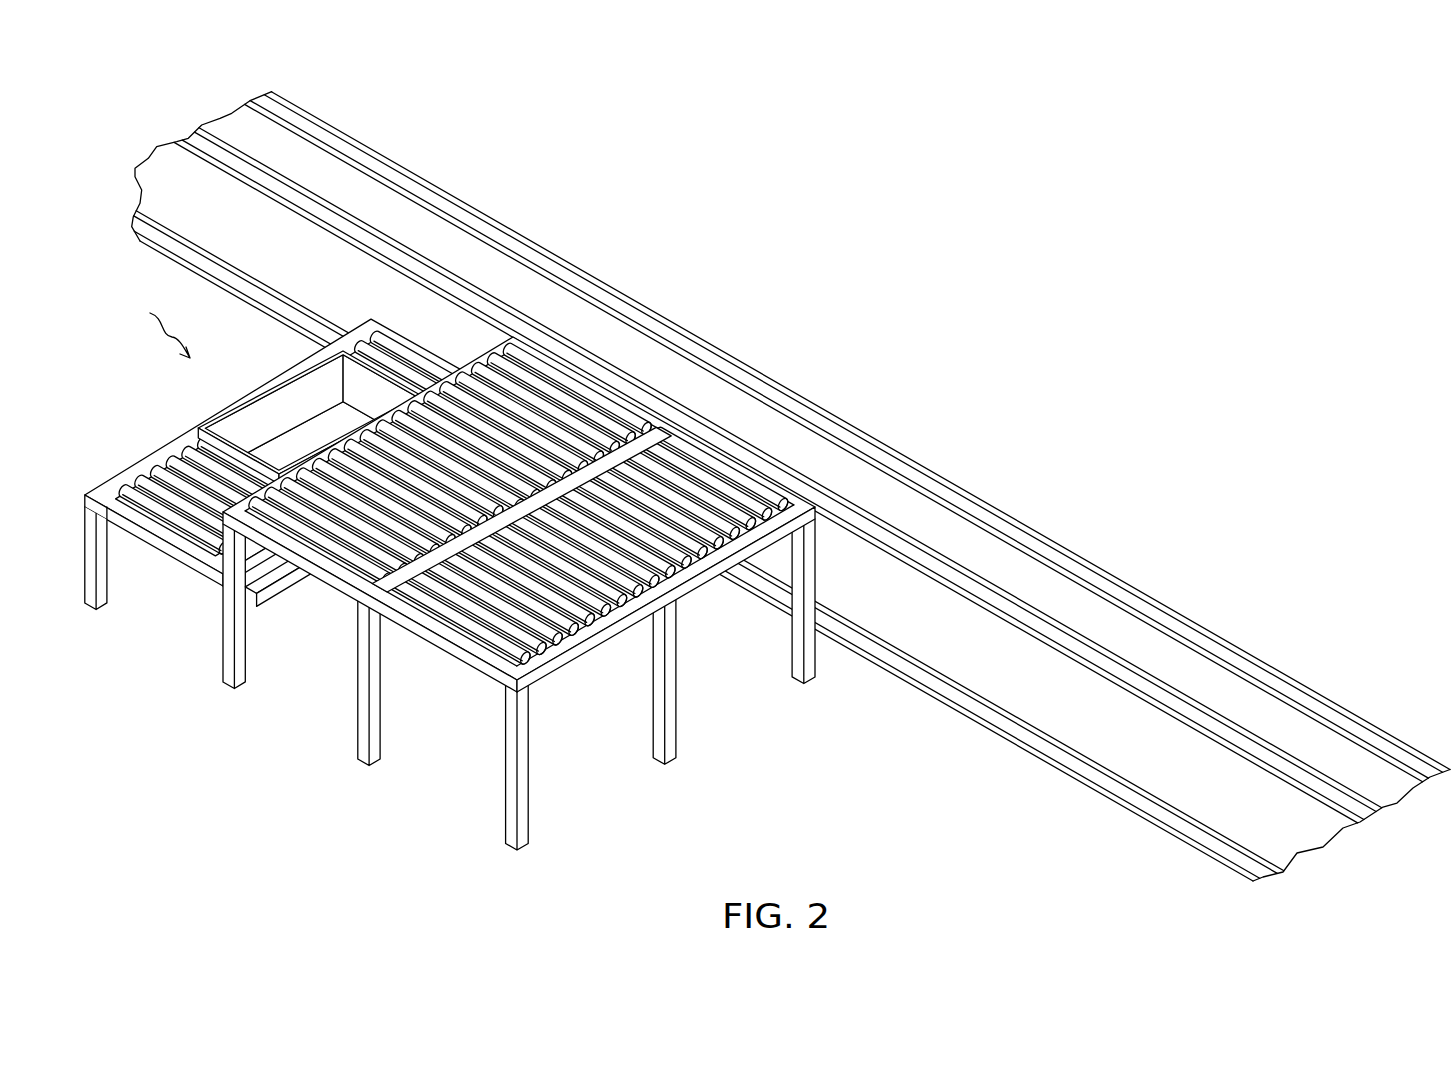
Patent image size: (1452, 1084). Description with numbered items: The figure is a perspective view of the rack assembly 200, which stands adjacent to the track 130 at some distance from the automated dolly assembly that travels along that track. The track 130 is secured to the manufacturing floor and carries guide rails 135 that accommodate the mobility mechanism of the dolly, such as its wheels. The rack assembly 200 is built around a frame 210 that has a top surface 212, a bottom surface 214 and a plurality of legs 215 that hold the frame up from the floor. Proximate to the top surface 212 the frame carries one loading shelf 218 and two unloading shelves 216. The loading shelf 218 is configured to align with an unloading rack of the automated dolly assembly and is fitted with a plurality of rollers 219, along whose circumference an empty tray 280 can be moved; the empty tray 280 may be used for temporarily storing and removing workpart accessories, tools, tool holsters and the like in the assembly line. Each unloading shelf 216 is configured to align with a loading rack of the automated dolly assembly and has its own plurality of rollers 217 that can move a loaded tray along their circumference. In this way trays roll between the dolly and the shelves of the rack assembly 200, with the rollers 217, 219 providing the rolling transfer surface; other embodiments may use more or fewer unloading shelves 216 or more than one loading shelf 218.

The track 130 is at (791, 476).
The guide rails 135 is at (405, 171).
The rack assembly 200 is at (143, 326).
The frame 210 is at (531, 518).
The top surface 212 is at (803, 503).
The bottom surface 214 is at (591, 652).
The legs 215 is at (97, 608).
The unloading shelf 216 is at (667, 427).
The rollers 217 is at (588, 392).
The loading shelf 218 is at (299, 452).
The rollers 219 is at (150, 477).
The empty tray 280 is at (297, 388).